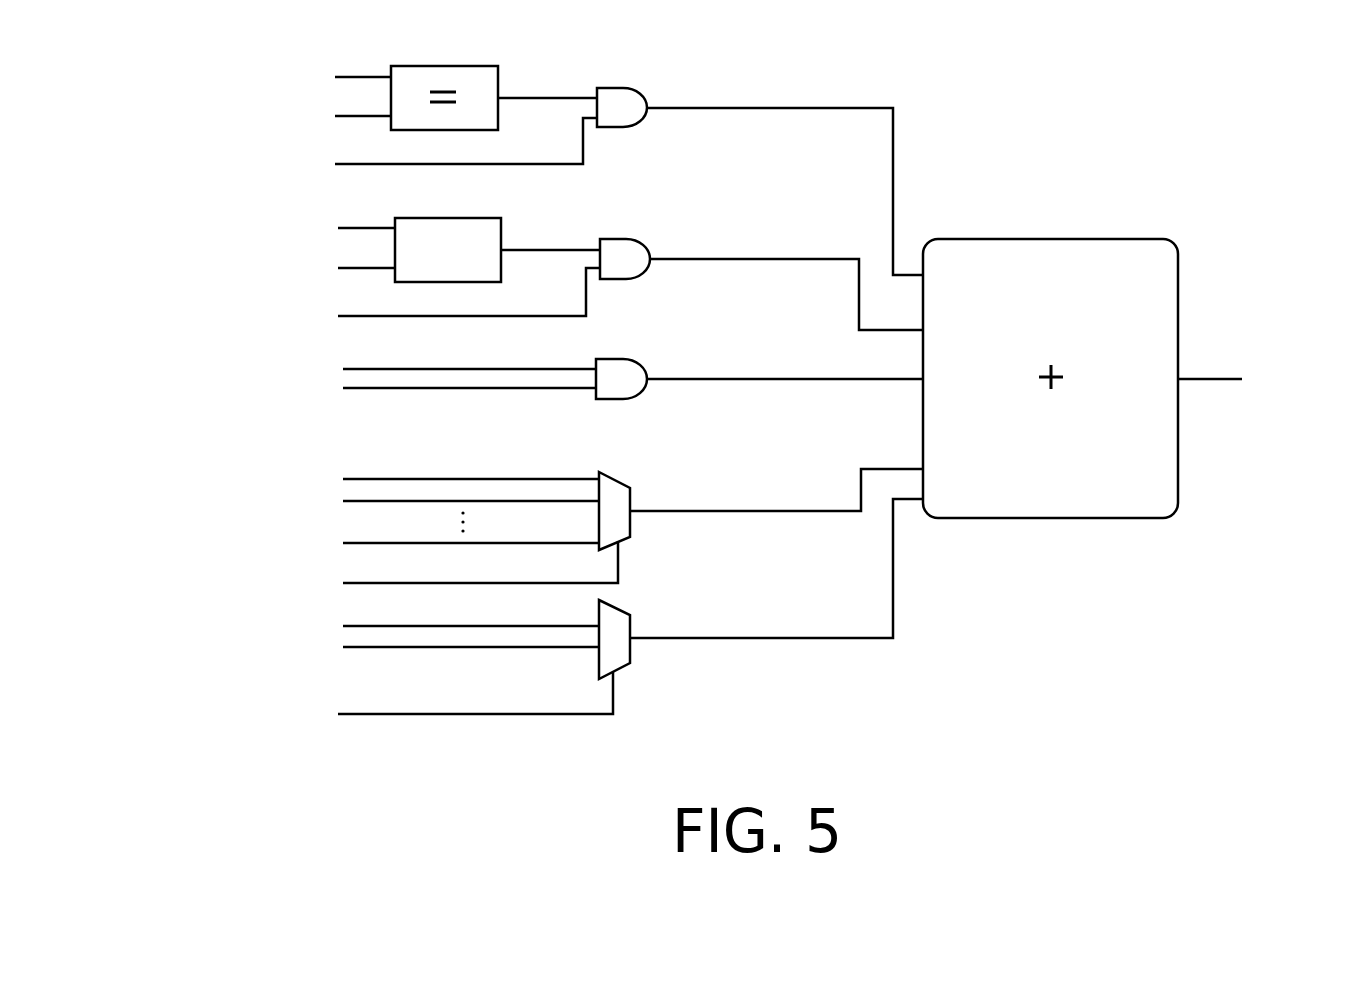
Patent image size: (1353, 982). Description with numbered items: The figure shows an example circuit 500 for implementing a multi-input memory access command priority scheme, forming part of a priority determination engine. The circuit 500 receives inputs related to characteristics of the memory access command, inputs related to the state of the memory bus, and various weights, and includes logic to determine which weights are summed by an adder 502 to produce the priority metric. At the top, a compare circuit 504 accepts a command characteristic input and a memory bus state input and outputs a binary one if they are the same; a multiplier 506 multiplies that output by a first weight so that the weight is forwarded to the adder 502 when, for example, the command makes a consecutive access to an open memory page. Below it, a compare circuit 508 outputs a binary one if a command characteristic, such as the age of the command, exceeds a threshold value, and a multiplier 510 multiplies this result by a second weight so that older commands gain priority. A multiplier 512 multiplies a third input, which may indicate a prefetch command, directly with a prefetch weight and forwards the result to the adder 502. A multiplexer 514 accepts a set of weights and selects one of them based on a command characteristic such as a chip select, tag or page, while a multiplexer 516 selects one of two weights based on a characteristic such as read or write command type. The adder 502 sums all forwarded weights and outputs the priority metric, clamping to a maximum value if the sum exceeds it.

The circuit 500 is at (218, 111).
The adder 502 is at (1053, 237).
The compare circuit 504 is at (447, 65).
The multiplier 506 is at (623, 87).
The compare circuit 508 is at (450, 216).
The multiplier 510 is at (628, 237).
The multiplier 512 is at (623, 356).
The multiplexer 514 is at (631, 487).
The multiplexer 516 is at (631, 613).